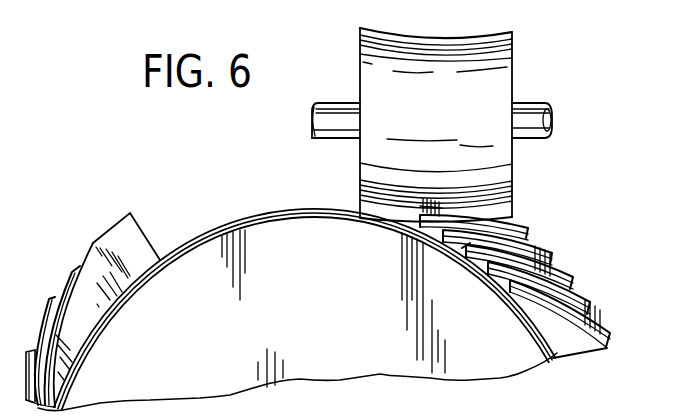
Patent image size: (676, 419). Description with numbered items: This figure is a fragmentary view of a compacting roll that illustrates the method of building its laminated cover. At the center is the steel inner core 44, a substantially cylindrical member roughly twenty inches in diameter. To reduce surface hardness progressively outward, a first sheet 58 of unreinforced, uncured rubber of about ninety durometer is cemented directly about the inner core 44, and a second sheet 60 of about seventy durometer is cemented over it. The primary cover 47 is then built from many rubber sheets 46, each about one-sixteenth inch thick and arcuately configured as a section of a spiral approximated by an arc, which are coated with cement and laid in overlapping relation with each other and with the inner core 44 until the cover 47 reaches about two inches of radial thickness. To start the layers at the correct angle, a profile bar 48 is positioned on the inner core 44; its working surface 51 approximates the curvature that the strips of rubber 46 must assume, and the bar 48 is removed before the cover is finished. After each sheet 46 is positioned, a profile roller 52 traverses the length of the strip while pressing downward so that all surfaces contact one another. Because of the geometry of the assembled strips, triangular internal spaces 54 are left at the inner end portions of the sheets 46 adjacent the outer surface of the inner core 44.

The steel inner core 44 is at (340, 337).
The rubber sheets 46 is at (578, 286).
The cover 47 is at (597, 309).
The profile bar 48 is at (123, 233).
The working surface 51 is at (83, 261).
The profile roller 52 is at (438, 124).
The triangular internal spaces 54 is at (465, 245).
The first sheet of unreinforced uncured rubber 58 is at (278, 222).
The second sheet of unreinforced uncured rubber 60 is at (259, 216).